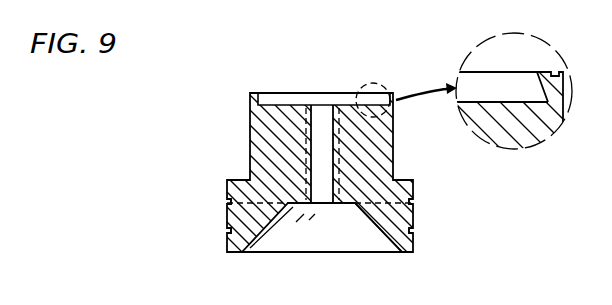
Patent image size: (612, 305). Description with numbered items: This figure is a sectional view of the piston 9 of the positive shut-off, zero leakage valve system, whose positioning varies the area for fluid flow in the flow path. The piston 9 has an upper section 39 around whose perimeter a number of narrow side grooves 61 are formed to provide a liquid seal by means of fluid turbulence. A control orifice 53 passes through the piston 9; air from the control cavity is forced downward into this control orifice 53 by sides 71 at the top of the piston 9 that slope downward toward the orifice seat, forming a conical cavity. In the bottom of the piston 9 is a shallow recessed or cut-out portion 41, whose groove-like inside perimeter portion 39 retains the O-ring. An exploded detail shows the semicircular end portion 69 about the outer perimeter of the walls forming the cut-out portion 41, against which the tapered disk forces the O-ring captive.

The piston 9 is at (246, 129).
The groove-like inside perimeter portion 39 is at (266, 99).
The cut-out portion 41 is at (348, 97).
The control orifice 53 is at (326, 204).
The side grooves 61 is at (226, 227).
The semicircular end portion 69 is at (551, 70).
The sloping sides 71 is at (374, 248).